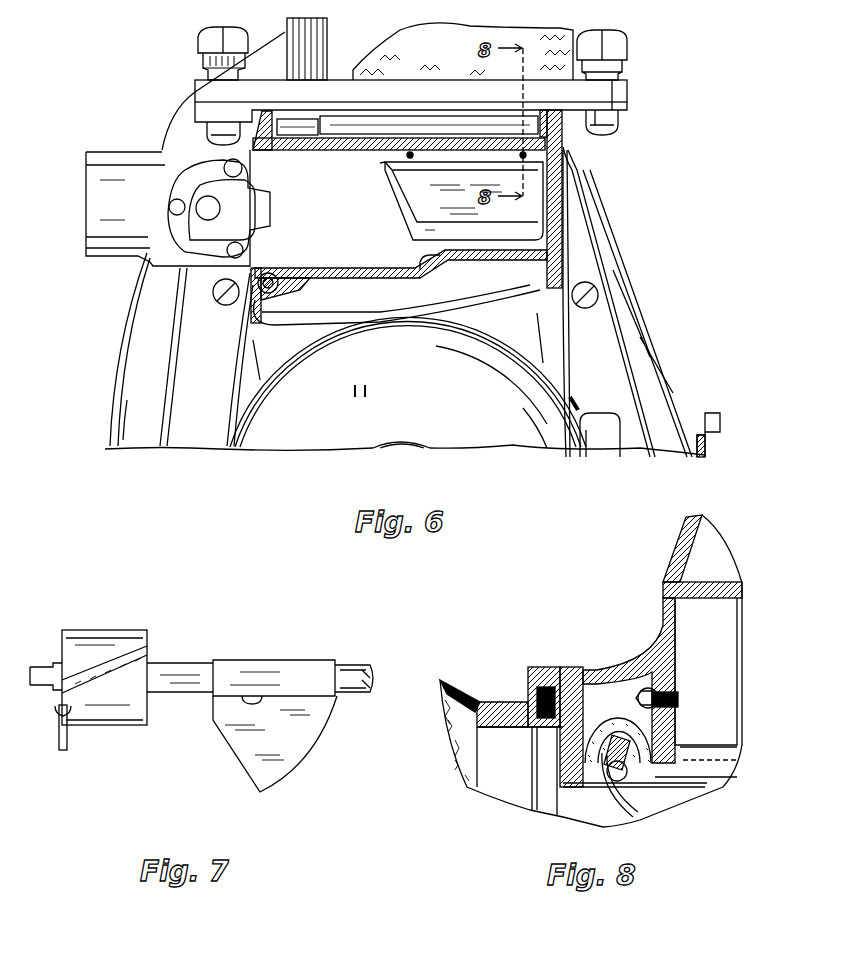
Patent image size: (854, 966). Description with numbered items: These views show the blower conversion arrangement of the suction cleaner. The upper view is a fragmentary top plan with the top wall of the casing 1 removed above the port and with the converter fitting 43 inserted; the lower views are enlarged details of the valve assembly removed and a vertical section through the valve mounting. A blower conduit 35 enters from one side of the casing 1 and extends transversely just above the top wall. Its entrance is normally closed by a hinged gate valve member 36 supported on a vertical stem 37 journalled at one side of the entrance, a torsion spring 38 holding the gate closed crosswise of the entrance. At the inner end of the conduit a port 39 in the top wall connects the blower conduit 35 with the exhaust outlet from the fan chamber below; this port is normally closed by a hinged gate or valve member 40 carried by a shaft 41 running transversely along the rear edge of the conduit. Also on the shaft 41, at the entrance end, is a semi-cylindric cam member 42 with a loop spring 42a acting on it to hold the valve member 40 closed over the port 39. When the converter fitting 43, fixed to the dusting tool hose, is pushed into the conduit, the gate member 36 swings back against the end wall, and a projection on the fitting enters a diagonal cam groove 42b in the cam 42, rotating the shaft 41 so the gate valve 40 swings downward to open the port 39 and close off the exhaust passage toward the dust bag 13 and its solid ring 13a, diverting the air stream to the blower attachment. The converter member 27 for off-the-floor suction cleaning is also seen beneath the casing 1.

In FIG. 6, the main casing 1 is at (593, 348).
In FIG. 8, the dust bag 13 is at (462, 698).
In FIG. 8, the solid ring 13a is at (540, 667).
In FIG. 6, the converter member 27 is at (170, 120).
In FIG. 6, the blower conduit 35 is at (448, 266).
In FIG. 6, the hinged gate valve member 36 is at (348, 268).
In FIG. 6, the vertical stem 37 is at (270, 273).
In FIG. 6, the torsion spring 38 is at (300, 290).
In FIG. 6, the port 39 is at (443, 233).
In FIG. 8, the port 39 is at (683, 747).
In FIG. 6, the hinged gate or valve member 40 is at (527, 200).
In FIG. 7, the hinged gate or valve member 40 is at (307, 747).
In FIG. 8, the hinged gate or valve member 40 is at (625, 808).
In FIG. 6, the shaft 41 is at (574, 128).
In FIG. 7, the shaft 41 is at (347, 666).
In FIG. 8, the shaft 41 is at (597, 750).
In FIG. 6, the cam member 42 is at (297, 133).
In FIG. 7, the cam member 42 is at (127, 645).
In FIG. 7, the loop spring 42a is at (70, 743).
In FIG. 7, the diagonal cam groove 42b is at (97, 668).
In FIG. 6, the converter fitting 43 is at (108, 240).